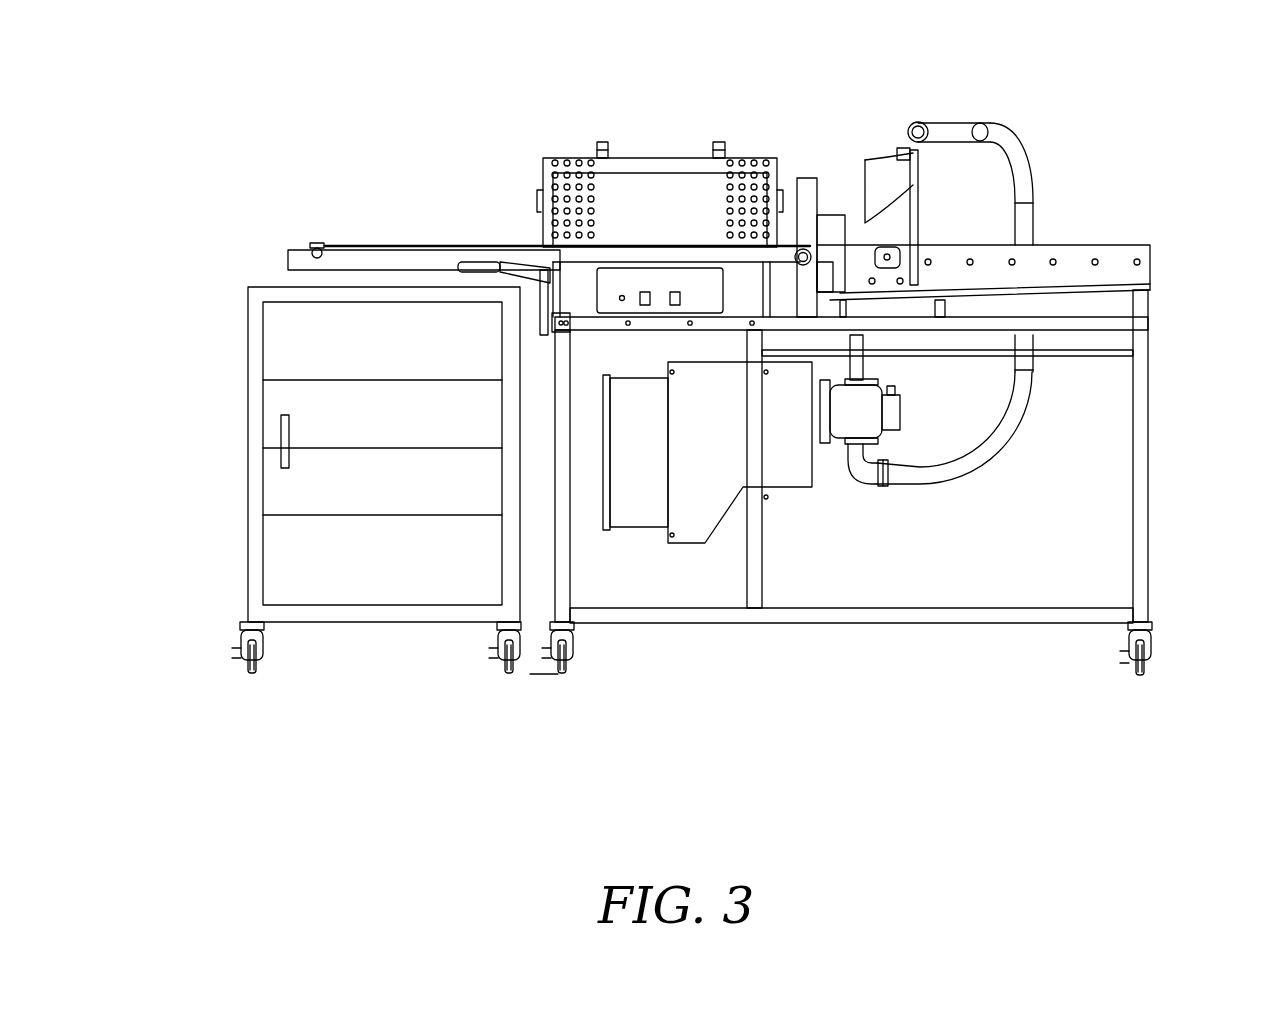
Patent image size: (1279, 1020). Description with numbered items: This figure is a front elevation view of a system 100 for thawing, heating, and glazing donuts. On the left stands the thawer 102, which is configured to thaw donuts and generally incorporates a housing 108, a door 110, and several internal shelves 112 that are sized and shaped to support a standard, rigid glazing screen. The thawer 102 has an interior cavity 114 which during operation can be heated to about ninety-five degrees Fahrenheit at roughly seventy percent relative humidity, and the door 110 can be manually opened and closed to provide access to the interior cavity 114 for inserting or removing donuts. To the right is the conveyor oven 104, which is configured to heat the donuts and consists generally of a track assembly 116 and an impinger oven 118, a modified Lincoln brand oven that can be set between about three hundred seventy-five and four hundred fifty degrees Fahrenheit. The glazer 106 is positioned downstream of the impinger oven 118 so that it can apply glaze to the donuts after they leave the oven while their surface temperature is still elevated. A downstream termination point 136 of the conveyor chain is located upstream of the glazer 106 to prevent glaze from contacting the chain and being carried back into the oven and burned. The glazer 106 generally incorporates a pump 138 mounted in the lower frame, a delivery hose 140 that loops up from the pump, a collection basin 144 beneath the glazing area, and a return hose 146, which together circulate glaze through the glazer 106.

The system 100 is at (297, 112).
The thawer 102 is at (213, 278).
The conveyor oven 104 is at (680, 95).
The glazer 106 is at (1077, 160).
The housing 108 is at (248, 335).
The door 110 is at (263, 418).
The shelves 112 is at (343, 517).
The interior cavity 114 is at (403, 480).
The track assembly 116 is at (412, 175).
The impinger oven 118 is at (568, 157).
The downstream termination point 136 is at (802, 238).
The pump 138 is at (845, 428).
The delivery hose 140 is at (1023, 418).
The collection basin 144 is at (945, 313).
The return hose 146 is at (865, 365).